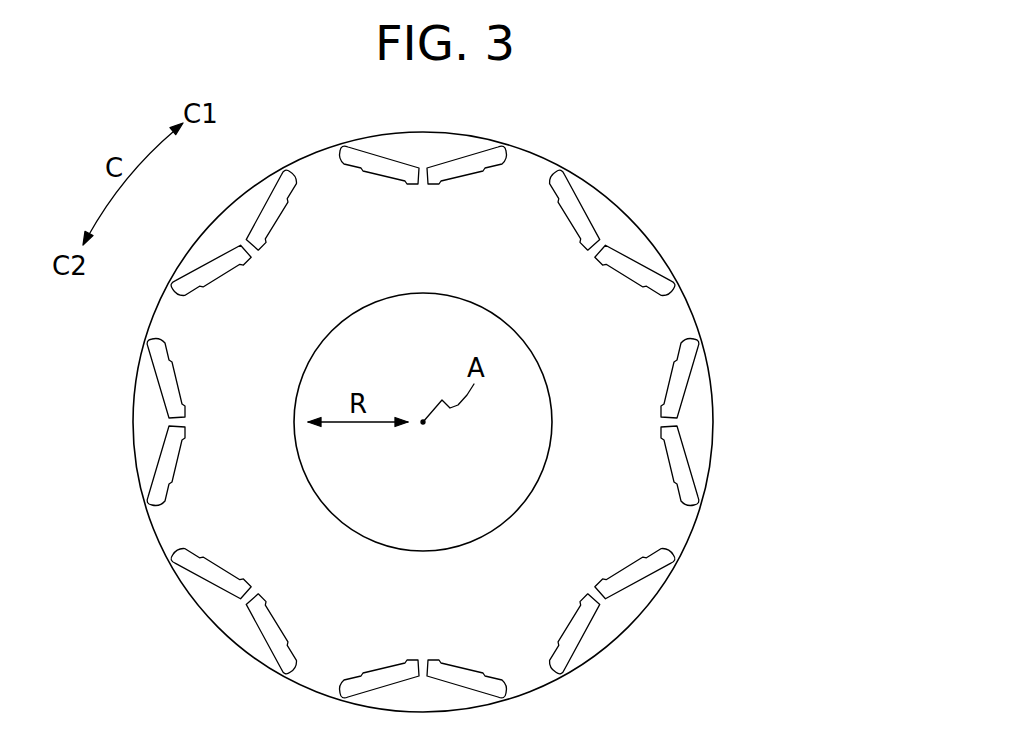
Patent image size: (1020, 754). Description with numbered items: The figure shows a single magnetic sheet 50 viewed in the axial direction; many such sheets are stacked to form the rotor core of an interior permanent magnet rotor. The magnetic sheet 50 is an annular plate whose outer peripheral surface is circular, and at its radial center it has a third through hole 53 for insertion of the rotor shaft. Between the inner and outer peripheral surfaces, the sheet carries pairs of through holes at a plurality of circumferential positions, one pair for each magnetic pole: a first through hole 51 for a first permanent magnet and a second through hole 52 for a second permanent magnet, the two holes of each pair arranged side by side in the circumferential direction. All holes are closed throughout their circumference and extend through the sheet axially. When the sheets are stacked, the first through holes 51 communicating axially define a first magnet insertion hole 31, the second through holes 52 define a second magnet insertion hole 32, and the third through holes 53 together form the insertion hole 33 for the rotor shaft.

The magnetic sheet 50 is at (613, 217).
The first through hole 51 is at (484, 392).
The first magnet insertion hole 31 is at (454, 158).
The second through hole 52 is at (484, 392).
The second magnet insertion hole 32 is at (396, 157).
The third through hole 53 is at (405, 432).
The insertion hole 33 is at (318, 501).